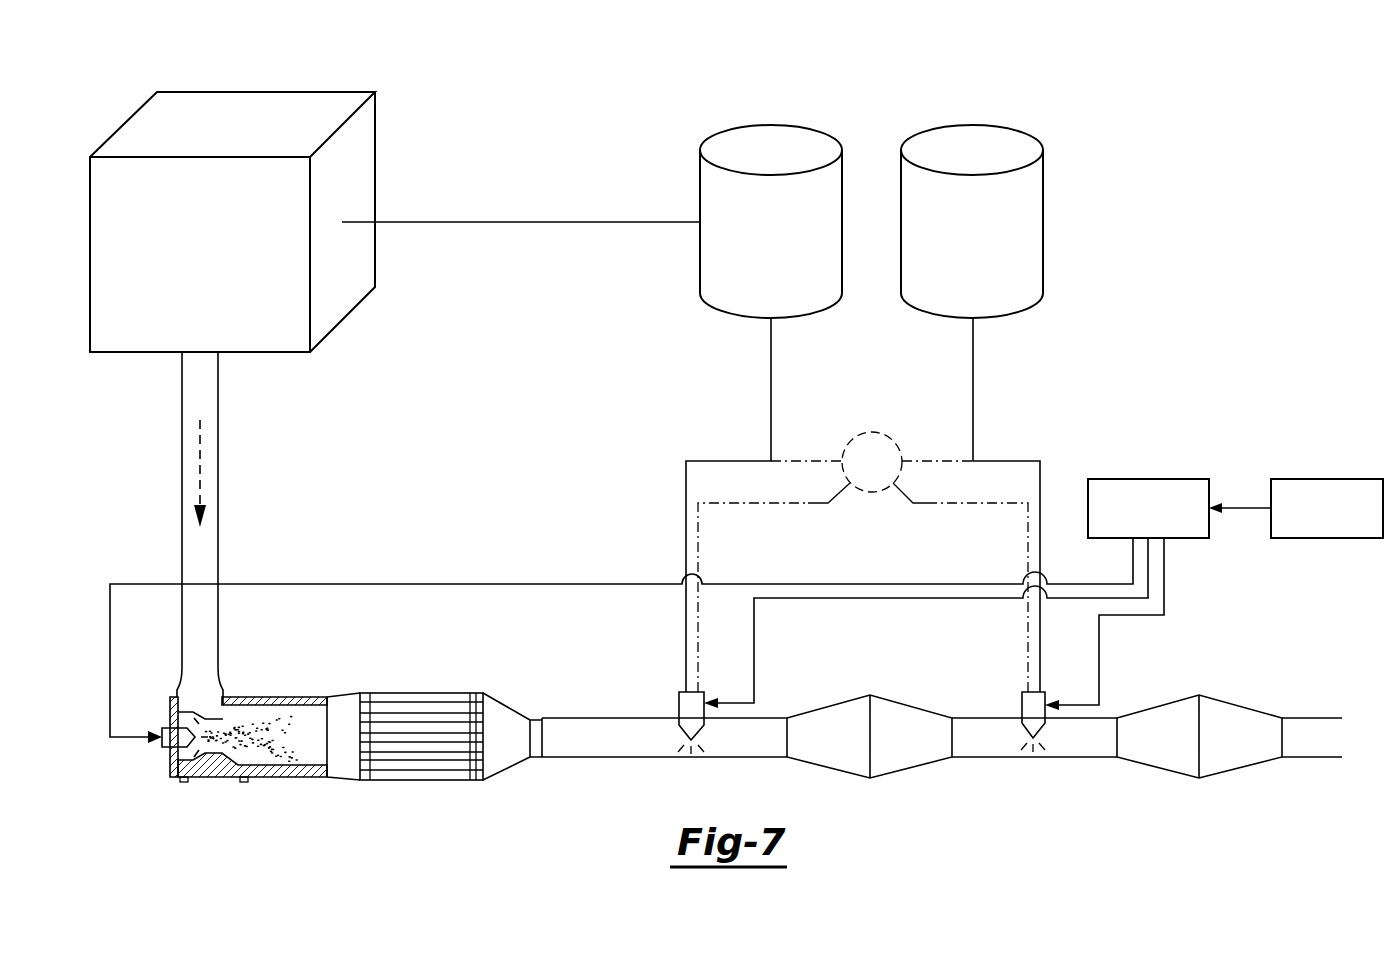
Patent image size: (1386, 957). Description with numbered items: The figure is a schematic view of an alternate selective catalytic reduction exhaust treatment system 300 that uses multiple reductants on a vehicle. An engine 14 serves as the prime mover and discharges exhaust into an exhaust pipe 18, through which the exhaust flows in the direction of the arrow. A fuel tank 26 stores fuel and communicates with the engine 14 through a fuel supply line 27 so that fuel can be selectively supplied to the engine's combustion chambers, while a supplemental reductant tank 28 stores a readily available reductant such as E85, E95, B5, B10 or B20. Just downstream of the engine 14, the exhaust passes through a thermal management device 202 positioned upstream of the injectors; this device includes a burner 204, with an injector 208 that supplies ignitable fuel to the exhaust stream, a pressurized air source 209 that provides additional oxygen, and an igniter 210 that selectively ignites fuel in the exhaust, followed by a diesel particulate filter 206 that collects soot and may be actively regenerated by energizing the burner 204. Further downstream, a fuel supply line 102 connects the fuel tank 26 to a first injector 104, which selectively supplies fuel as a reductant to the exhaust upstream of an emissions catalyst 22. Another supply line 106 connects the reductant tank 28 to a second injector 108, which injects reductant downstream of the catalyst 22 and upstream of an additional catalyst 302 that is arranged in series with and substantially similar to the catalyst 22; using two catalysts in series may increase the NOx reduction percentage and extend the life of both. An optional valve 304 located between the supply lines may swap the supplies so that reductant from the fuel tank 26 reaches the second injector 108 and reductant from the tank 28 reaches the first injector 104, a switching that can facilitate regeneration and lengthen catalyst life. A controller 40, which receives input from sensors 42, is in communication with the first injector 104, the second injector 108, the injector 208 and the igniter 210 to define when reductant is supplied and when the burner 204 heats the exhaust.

The engine 14 is at (269, 108).
The exhaust pipe 18 is at (218, 537).
The emissions catalyst 22 is at (908, 779).
The fuel tank 26 is at (771, 142).
The fuel supply line 27 is at (506, 222).
The supplemental reductant tank 28 is at (972, 142).
The controller 40 is at (1149, 479).
The sensors 42 is at (1292, 479).
The fuel supply line 102 is at (771, 413).
The first injector 104 is at (679, 705).
The supply line 106 is at (973, 382).
The second injector 108 is at (1046, 697).
The thermal management device 202 is at (285, 763).
The burner 204 is at (172, 780).
The diesel particulate filter 206 is at (420, 780).
The injector 208 is at (168, 730).
The pressurized air source 209 is at (185, 783).
The igniter 210 is at (245, 783).
The exhaust treatment system 300 is at (1085, 195).
The additional catalyst 302 is at (1238, 779).
The valve 304 is at (858, 434).